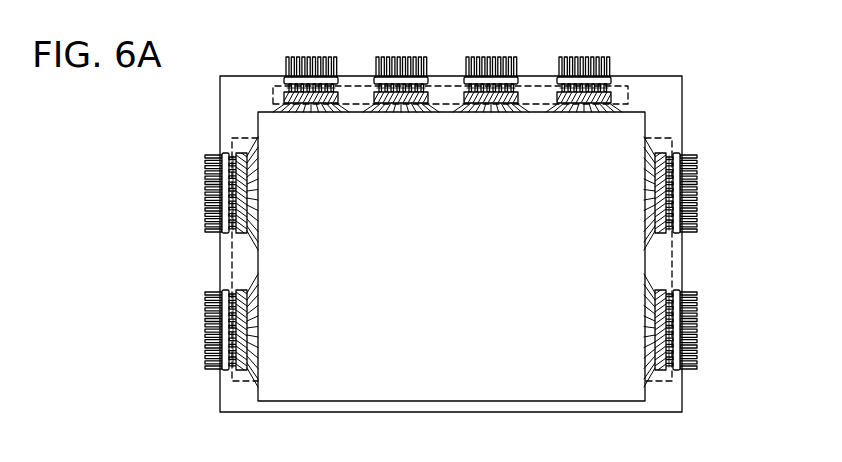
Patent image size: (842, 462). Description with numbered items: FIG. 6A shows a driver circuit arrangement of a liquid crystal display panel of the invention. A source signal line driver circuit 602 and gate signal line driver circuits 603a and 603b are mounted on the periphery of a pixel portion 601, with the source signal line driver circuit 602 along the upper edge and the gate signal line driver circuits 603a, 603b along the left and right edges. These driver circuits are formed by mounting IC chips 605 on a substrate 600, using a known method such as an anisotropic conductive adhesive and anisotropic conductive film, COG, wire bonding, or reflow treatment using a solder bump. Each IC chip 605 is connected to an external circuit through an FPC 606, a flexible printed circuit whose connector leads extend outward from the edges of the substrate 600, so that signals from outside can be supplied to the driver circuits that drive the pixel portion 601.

The substrate 600 is at (240, 100).
The pixel portion 601 is at (621, 258).
The source signal line driver circuit 602 is at (271, 93).
The gate signal line driver circuit 603a is at (233, 382).
The gate signal line driver circuit 603b is at (660, 380).
The IC chip 605 is at (625, 90).
The FPC (Flexible Printed Circuit) 606 is at (612, 62).